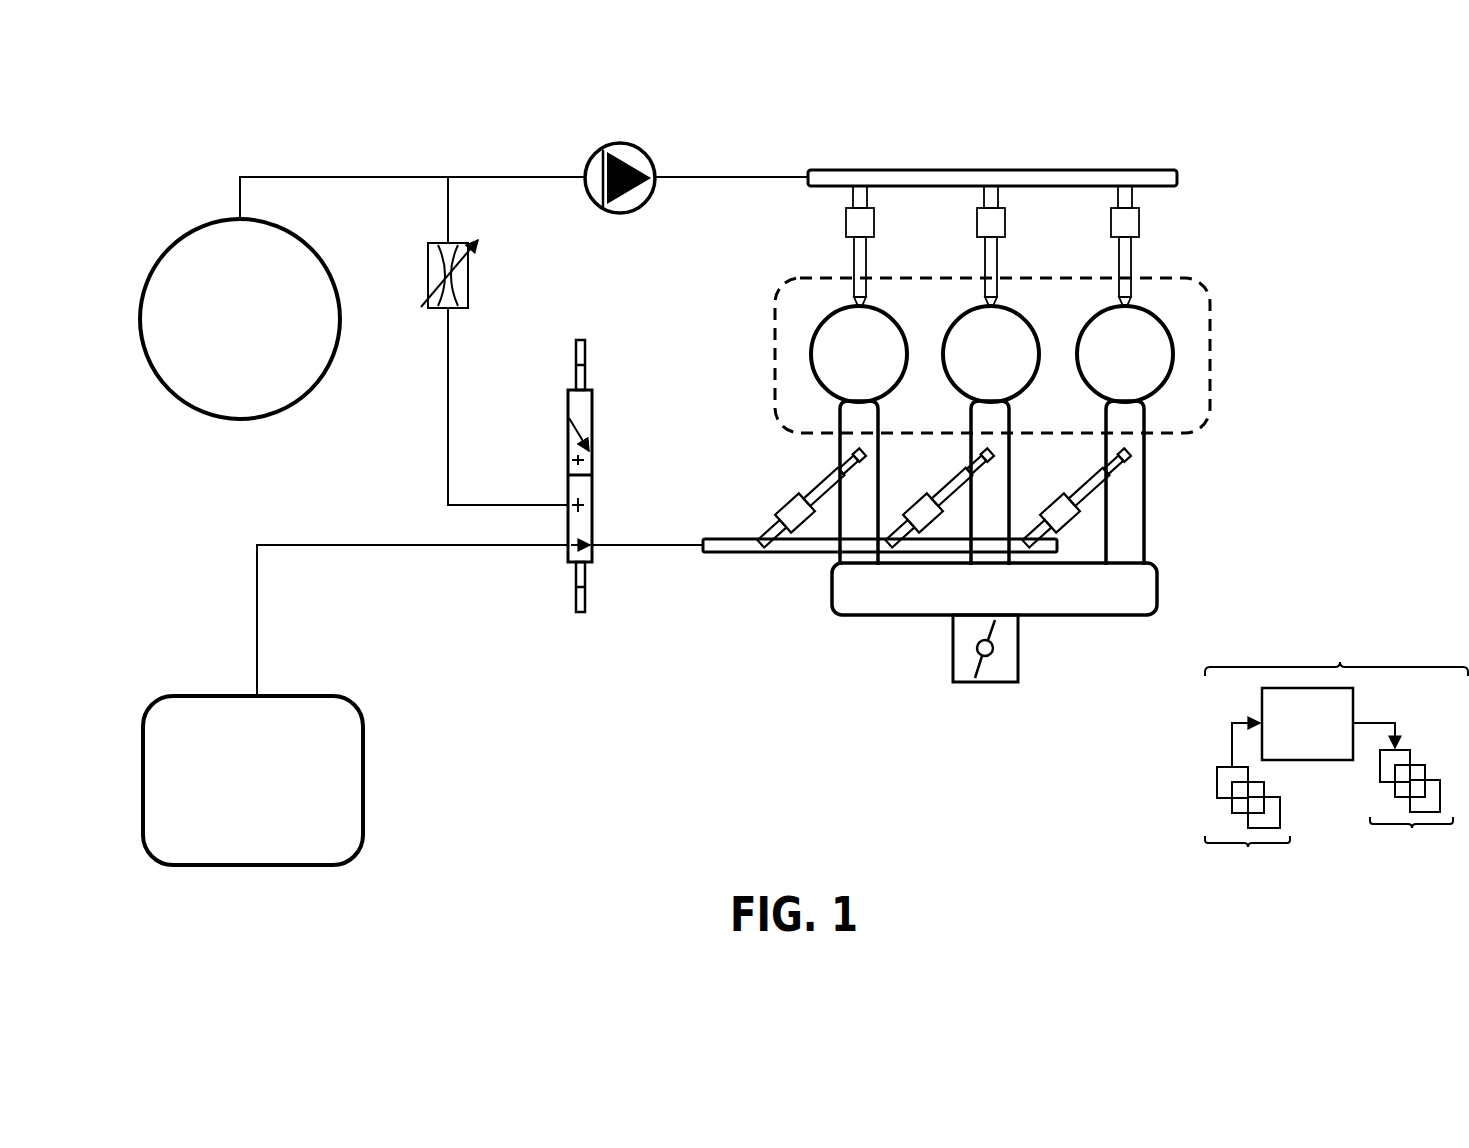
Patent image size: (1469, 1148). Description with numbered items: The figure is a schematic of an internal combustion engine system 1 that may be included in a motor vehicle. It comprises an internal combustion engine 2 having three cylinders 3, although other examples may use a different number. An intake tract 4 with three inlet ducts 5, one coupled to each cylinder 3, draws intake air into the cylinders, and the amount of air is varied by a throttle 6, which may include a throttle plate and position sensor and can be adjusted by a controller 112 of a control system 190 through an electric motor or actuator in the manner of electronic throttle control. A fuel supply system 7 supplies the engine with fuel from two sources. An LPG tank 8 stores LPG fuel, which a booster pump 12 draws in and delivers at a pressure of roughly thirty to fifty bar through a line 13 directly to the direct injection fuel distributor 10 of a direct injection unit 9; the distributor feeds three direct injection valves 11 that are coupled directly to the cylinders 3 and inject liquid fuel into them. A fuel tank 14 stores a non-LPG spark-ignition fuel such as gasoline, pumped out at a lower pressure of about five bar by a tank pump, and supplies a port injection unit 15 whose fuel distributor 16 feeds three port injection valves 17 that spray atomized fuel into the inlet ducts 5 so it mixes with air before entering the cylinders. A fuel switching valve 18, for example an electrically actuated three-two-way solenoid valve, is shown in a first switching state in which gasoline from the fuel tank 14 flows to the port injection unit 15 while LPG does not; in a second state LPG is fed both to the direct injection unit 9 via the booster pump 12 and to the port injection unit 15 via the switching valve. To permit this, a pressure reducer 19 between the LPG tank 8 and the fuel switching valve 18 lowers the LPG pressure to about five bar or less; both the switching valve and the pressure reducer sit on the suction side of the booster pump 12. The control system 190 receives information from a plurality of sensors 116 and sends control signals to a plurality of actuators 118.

The internal combustion engine system 1 is at (1305, 160).
The internal combustion engine 2 is at (1183, 277).
The cylinders 3 is at (1173, 370).
The intake tract 4 is at (885, 647).
The inlet ducts 5 is at (1147, 478).
The throttle 6 is at (1018, 648).
The fuel supply system 7 is at (408, 138).
The LPG tank 8 is at (150, 370).
The direct injection unit 9 is at (1090, 143).
The direct injection fuel distributor 10 is at (936, 168).
The direct injection valves 11 is at (1133, 195).
The booster pump 12 is at (628, 142).
The line 13 is at (713, 178).
The fuel tank 14 is at (363, 767).
The port injection unit 15 is at (800, 563).
The fuel distributor 16 is at (725, 552).
The port injection valves 17 is at (818, 483).
The fuel switching valve 18 is at (593, 420).
The pressure reducer 19 is at (468, 267).
The controller 112 is at (1307, 724).
The sensors 116 is at (1247, 811).
The actuators 118 is at (1403, 801).
The control system 190 is at (1336, 756).